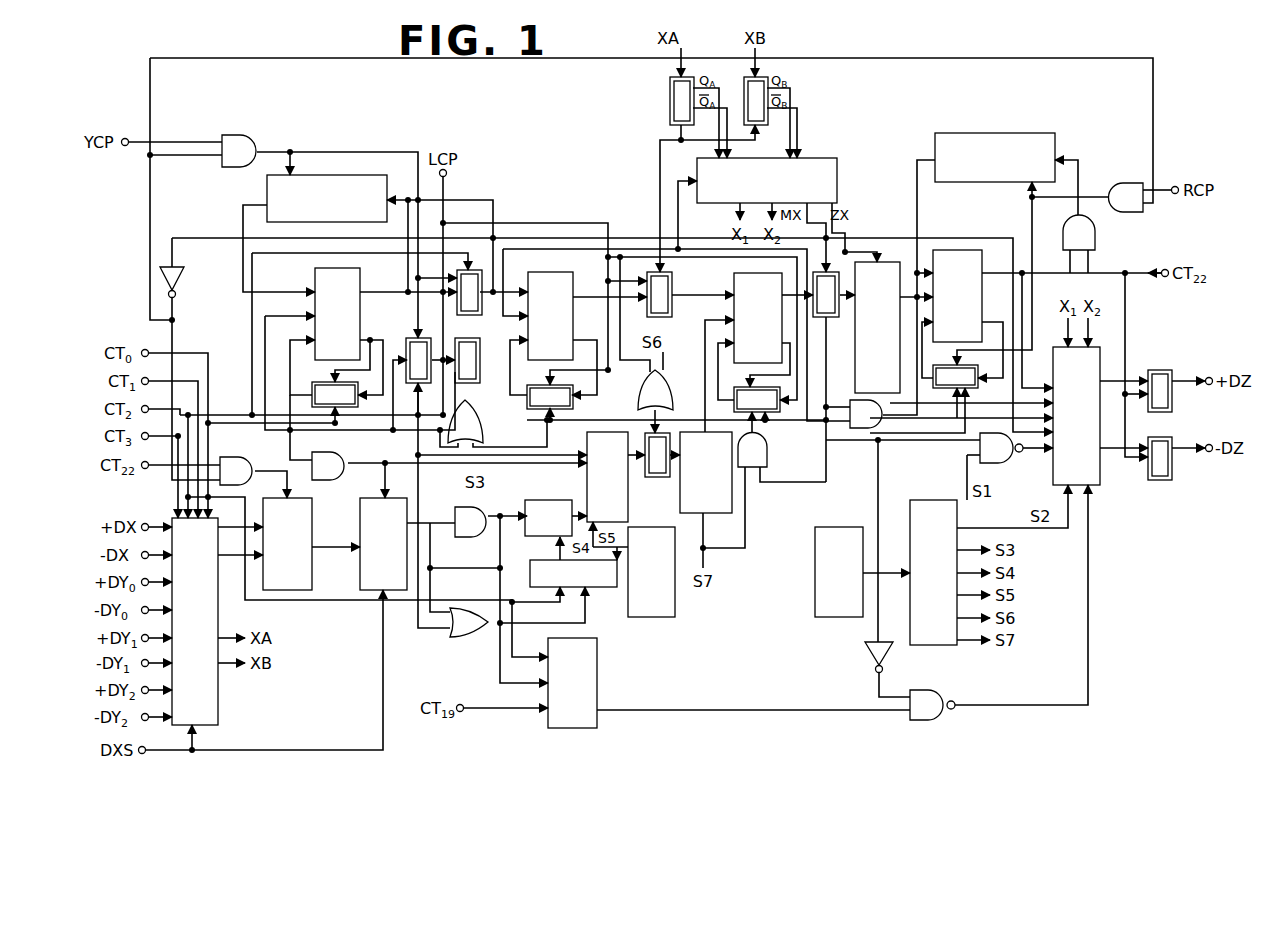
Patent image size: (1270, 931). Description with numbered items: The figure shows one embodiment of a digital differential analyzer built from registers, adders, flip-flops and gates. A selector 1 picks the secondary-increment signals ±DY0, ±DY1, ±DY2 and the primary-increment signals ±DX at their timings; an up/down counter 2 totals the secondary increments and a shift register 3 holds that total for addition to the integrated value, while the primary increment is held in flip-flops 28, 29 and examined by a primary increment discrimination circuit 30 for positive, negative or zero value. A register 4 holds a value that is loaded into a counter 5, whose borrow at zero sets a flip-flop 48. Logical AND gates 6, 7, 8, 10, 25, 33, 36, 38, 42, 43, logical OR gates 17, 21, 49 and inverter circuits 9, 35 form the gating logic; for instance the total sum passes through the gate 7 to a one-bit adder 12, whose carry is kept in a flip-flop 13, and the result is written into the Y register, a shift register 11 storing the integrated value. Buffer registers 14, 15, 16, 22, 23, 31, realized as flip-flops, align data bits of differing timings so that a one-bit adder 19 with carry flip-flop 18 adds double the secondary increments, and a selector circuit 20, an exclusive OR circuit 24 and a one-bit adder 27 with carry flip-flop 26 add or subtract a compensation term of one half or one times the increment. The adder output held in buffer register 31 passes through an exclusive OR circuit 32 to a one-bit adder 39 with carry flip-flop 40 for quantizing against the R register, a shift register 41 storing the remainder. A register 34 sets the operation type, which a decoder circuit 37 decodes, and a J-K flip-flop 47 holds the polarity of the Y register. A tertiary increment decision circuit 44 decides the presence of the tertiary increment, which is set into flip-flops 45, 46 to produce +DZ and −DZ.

The selector 1 is at (218, 704).
The up/down counter 2 is at (312, 576).
The shift register 3 is at (368, 590).
The register 4 is at (675, 608).
The counter 5 is at (603, 588).
The logical AND gate 6 is at (466, 537).
The logical AND gate 7 is at (328, 480).
The logical AND gate 8 is at (240, 457).
The inverter circuit 9 is at (178, 280).
The logical AND gate 10 is at (252, 137).
The shift register 11 is at (350, 175).
The one-bit adder 12 is at (315, 272).
The flip-flop 13 is at (322, 382).
The buffer register 14 is at (406, 346).
The buffer register 15 is at (468, 338).
The buffer register 16 is at (482, 285).
The logical OR gate 17 is at (483, 413).
The flip-flop 18 is at (573, 400).
The one-bit adder 19 is at (565, 272).
The selector circuit 20 is at (587, 480).
The logical OR gate 21 is at (672, 392).
The buffer register 22 is at (656, 477).
The buffer register 23 is at (672, 306).
The exclusive OR circuit 24 is at (718, 513).
The logical AND gate 25 is at (767, 455).
The flip-flop 26 is at (734, 396).
The one-bit adder 27 is at (734, 278).
The flip-flop 28 is at (670, 102).
The flip-flop 29 is at (772, 125).
The primary increment discrimination circuit 30 is at (828, 158).
The buffer register 31 is at (826, 317).
The exclusive OR circuit 32 is at (884, 262).
The logical AND gate 33 is at (870, 428).
The register 34 is at (815, 612).
The inverter circuit 35 is at (865, 654).
The logical AND gate 36 is at (940, 690).
The decoder circuit 37 is at (930, 500).
The logical AND gate 38 is at (996, 463).
The one-bit adder 39 is at (957, 250).
The flip-flop 40 is at (950, 363).
The shift register 41 is at (990, 133).
The logical AND gate 42 is at (1095, 232).
The logical AND gate 43 is at (1127, 183).
The tertiary increment decision circuit 44 is at (1100, 458).
The flip-flop 45 is at (1162, 370).
The flip-flop 46 is at (1160, 480).
The J-K flip-flop 47 is at (597, 670).
The flip-flop 48 is at (532, 500).
The logical OR gate 49 is at (468, 637).